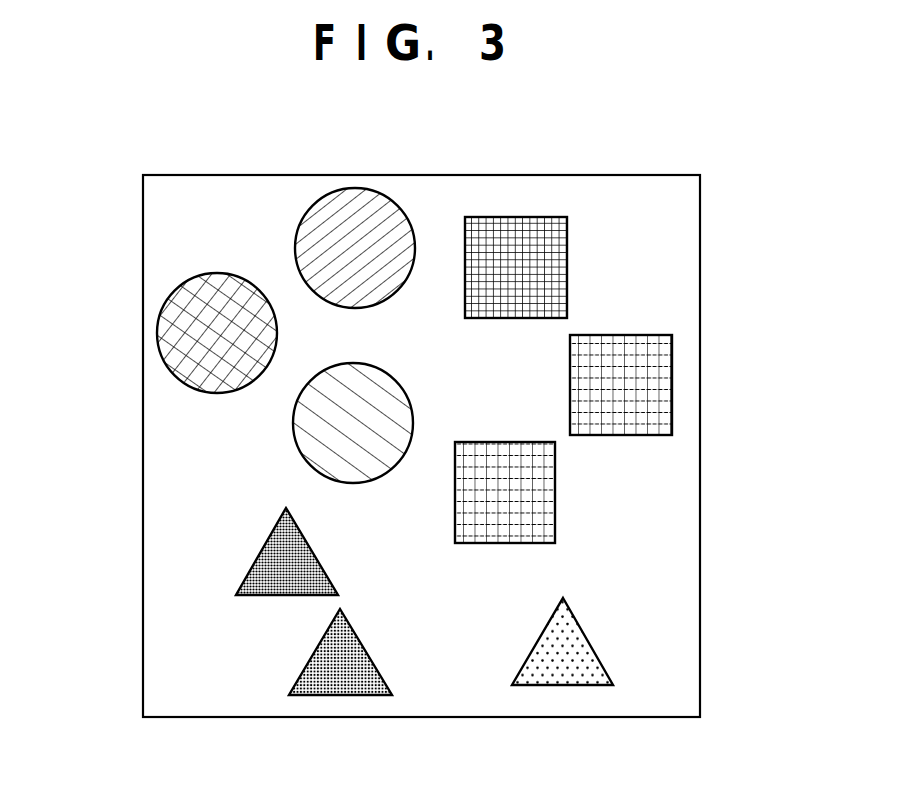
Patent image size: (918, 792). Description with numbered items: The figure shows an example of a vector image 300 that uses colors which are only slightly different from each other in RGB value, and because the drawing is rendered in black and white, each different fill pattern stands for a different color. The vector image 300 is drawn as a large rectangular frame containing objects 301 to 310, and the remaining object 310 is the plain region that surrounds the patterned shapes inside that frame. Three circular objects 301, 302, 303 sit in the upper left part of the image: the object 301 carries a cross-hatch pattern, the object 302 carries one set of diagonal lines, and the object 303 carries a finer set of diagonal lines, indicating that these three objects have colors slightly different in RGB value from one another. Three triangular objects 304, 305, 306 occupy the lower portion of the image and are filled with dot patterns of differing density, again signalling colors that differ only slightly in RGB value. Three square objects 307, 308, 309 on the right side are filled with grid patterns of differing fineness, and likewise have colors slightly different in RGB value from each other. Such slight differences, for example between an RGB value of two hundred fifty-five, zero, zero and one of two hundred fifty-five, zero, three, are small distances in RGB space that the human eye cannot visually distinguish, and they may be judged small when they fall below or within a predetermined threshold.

The vector image 300 is at (143, 212).
The object 301 is at (158, 333).
The object 302 is at (294, 423).
The object 303 is at (353, 188).
The object 304 is at (257, 560).
The object 305 is at (318, 645).
The object 306 is at (594, 650).
The object 307 is at (567, 265).
The object 308 is at (672, 382).
The object 309 is at (555, 490).
The object 310 is at (670, 563).